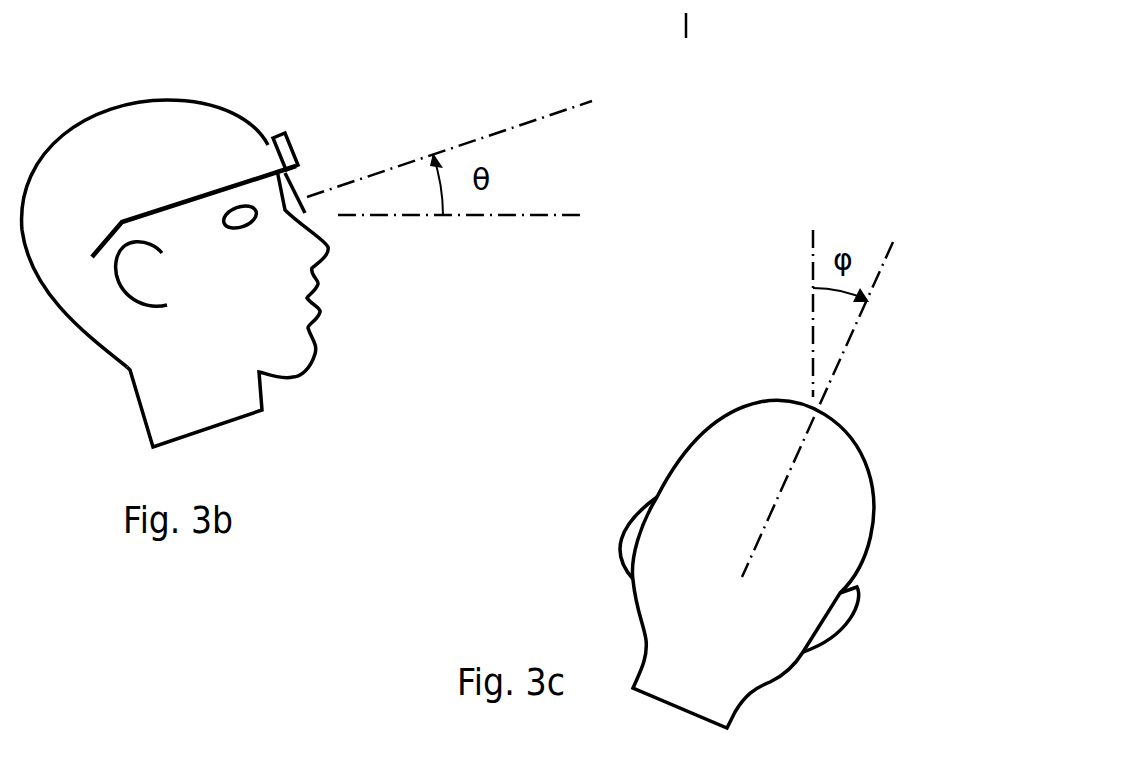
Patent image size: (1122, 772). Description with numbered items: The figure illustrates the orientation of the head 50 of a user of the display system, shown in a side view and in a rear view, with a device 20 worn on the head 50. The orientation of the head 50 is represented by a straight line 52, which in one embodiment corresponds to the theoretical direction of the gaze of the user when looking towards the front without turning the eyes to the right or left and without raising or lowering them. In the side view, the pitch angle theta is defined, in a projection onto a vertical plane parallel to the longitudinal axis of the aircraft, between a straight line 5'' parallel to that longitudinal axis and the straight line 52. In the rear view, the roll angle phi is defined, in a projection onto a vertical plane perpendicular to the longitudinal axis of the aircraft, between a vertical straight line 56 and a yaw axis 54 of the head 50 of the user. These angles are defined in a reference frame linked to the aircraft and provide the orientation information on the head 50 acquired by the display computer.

In FIG. 3B, the head of the user 50 is at (170, 100).
In FIG. 3C, the head of the user 50 is at (728, 410).
In FIG. 3B, the head-mounted device 20 is at (288, 133).
In FIG. 3B, the straight line representing the orientation of the head 52 is at (493, 134).
In FIG. 3B, the straight line parallel to the longitudinal axis of the aircraft 5'' is at (460, 263).
In FIG. 3C, the vertical straight line 56 is at (812, 250).
In FIG. 3C, the yaw axis of the head of the user 54 is at (850, 338).